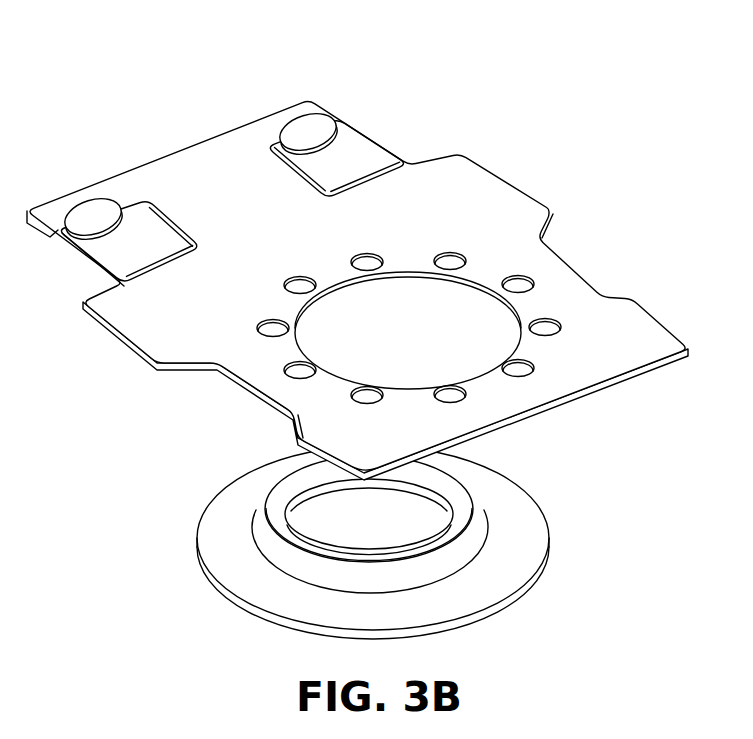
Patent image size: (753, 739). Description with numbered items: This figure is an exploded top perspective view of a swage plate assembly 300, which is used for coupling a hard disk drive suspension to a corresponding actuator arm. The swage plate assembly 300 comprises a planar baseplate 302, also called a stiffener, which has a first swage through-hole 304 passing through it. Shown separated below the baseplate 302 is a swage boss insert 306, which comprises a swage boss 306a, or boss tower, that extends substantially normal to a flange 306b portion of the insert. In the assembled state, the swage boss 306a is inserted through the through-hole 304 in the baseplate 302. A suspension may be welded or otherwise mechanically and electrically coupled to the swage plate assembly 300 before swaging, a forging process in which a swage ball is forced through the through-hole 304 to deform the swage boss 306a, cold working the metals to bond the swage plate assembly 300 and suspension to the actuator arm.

The swage plate assembly 300 is at (357, 336).
The planar baseplate 302 is at (357, 291).
The first swage through-hole 304 is at (389, 336).
The swage boss insert 306 is at (396, 542).
The swage boss 306a is at (312, 565).
The flange 306b is at (523, 507).